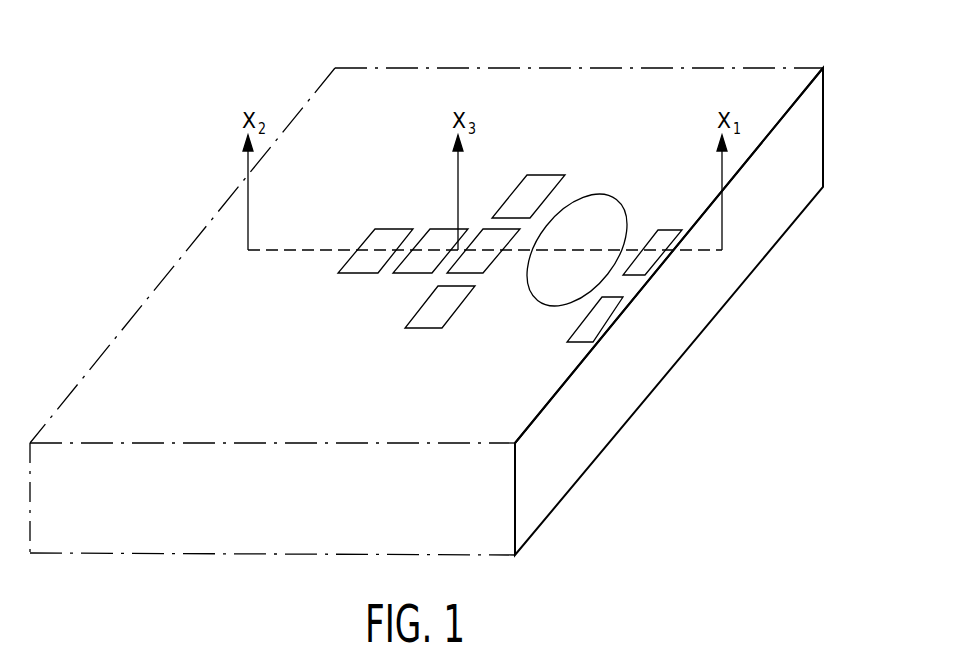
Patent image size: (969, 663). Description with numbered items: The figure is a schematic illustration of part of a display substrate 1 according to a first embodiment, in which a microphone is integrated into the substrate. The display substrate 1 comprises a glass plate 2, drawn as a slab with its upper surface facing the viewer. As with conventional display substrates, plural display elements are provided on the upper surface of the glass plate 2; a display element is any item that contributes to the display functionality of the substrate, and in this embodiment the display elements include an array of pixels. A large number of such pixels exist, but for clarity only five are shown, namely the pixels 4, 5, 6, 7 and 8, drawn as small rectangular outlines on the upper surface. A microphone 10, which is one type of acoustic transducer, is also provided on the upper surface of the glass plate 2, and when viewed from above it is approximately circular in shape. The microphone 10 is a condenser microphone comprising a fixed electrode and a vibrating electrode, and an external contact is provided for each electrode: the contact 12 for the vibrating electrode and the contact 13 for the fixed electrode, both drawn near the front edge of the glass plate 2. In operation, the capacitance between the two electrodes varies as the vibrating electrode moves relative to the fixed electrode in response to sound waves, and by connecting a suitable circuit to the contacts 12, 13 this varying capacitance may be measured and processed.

The display substrate 1 is at (93, 241).
The glass plate 2 is at (787, 110).
The pixel 4 is at (483, 230).
The pixel 5 is at (408, 274).
The pixel 6 is at (355, 274).
The pixel 7 is at (422, 330).
The pixel 8 is at (545, 175).
The microphone 10 is at (608, 193).
The contact 12 is at (669, 229).
The contact 13 is at (577, 343).